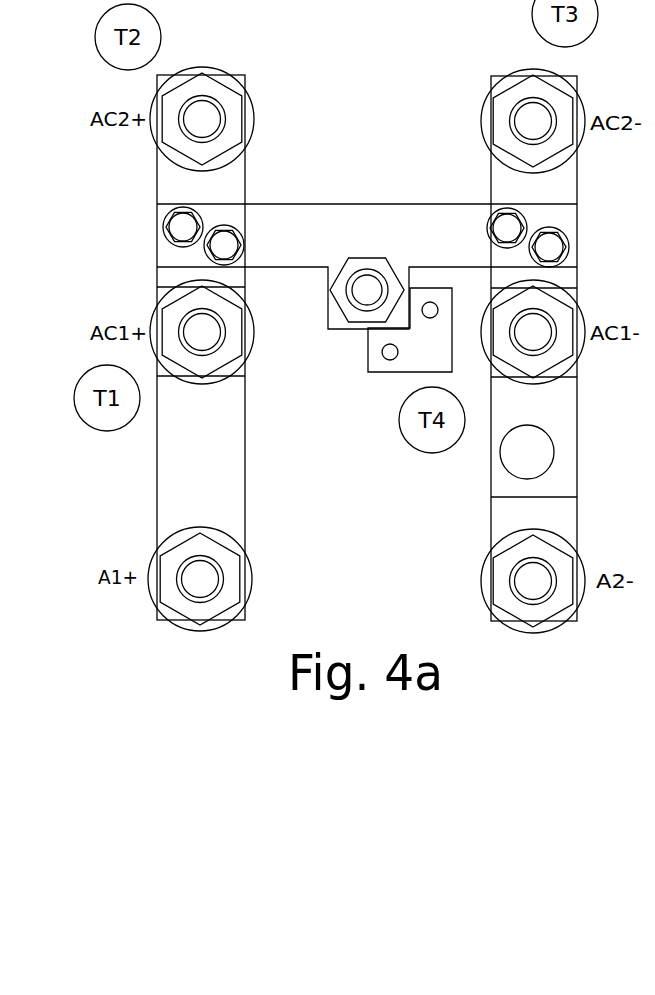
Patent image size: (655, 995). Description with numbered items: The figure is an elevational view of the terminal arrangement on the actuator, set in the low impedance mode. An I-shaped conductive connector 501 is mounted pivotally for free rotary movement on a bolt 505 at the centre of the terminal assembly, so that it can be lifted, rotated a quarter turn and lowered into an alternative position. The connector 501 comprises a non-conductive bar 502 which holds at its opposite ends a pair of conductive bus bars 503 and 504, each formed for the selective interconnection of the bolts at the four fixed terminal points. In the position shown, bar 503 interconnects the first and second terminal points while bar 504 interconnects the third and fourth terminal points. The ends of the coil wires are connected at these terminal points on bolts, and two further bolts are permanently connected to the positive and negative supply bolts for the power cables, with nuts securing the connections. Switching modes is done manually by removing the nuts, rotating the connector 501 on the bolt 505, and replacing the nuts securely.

The I-shaped conductive connector 501 is at (295, 203).
The non-conductive bar 502 is at (278, 247).
The conductive bus bar 503 is at (170, 185).
The conductive bus bar 504 is at (500, 190).
The bolt 505 is at (367, 283).